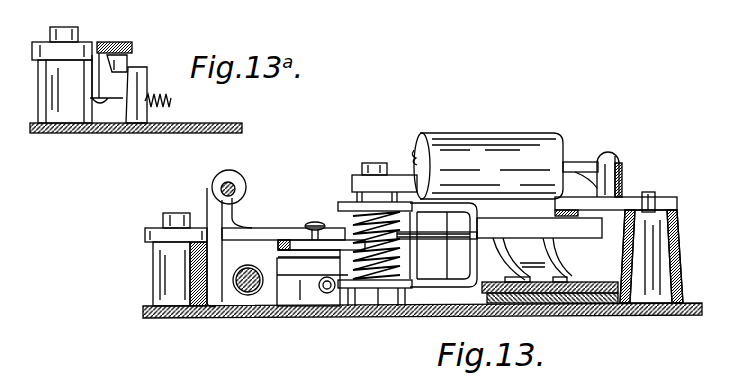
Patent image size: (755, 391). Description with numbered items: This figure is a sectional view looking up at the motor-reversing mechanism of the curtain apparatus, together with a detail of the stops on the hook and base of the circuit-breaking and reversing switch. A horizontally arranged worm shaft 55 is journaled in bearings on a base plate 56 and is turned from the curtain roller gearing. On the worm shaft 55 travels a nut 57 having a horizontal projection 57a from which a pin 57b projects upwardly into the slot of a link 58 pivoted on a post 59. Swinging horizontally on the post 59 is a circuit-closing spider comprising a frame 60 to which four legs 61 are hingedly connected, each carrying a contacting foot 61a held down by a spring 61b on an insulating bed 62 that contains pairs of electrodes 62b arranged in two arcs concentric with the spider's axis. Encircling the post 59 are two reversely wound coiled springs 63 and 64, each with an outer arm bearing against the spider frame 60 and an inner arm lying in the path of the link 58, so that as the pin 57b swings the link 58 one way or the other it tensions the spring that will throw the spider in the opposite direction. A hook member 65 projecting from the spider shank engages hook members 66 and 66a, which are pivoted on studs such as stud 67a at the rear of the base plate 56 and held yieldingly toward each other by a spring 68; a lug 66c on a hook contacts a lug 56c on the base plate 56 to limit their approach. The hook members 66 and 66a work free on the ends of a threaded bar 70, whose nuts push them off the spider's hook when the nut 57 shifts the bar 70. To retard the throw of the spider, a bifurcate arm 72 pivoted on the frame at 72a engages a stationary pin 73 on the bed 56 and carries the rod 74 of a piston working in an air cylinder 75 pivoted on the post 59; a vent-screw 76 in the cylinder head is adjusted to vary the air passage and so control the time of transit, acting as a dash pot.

In FIG. 13, the worm shaft 55 is at (248, 283).
In FIG. 13A, the base plate 56 is at (100, 134).
In FIG. 13, the base plate 56 is at (397, 308).
In FIG. 13A, the lug on base plate 56c is at (147, 78).
In FIG. 13, the nut 57 is at (278, 247).
In FIG. 13, the horizontal projection 57a is at (293, 308).
In FIG. 13, the pin 57b is at (300, 223).
In FIG. 13, the link 58 is at (190, 307).
In FIG. 13, the post 59 is at (370, 163).
In FIG. 13, the spider frame 60 is at (463, 205).
In FIG. 13, the leg 61 is at (624, 258).
In FIG. 13, the contacting foot 61a is at (678, 274).
In FIG. 13, the spring 61b is at (577, 260).
In FIG. 13, the insulating bed 62 is at (612, 304).
In FIG. 13, the electrode 62b is at (582, 318).
In FIG. 13, the coiled spring 63 is at (397, 238).
In FIG. 13, the coiled spring 64 is at (355, 284).
In FIG. 13, the hook member 65 is at (427, 232).
In FIG. 13A, the hook member 66 is at (110, 37).
In FIG. 13, the hook member 66a is at (258, 233).
In FIG. 13A, the lug on hook member 66c is at (118, 65).
In FIG. 13, the stud 67a is at (163, 216).
In FIG. 13A, the spring 68 is at (163, 108).
In FIG. 13, the spring 68 is at (322, 293).
In FIG. 13, the threaded bar 70 is at (246, 186).
In FIG. 13, the bifurcate arm 72 is at (655, 197).
In FIG. 13, the pivot 72a is at (567, 192).
In FIG. 13, the stationary pin 73 is at (677, 203).
In FIG. 13, the piston rod 74 is at (630, 205).
In FIG. 13, the air cylinder 75 is at (538, 148).
In FIG. 13, the vent-screw 76 is at (418, 152).